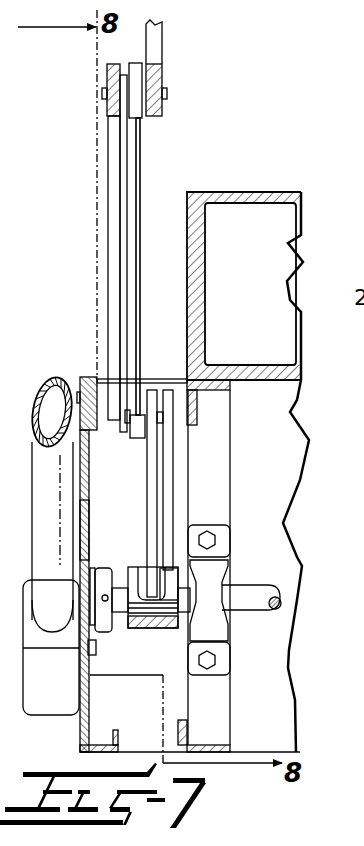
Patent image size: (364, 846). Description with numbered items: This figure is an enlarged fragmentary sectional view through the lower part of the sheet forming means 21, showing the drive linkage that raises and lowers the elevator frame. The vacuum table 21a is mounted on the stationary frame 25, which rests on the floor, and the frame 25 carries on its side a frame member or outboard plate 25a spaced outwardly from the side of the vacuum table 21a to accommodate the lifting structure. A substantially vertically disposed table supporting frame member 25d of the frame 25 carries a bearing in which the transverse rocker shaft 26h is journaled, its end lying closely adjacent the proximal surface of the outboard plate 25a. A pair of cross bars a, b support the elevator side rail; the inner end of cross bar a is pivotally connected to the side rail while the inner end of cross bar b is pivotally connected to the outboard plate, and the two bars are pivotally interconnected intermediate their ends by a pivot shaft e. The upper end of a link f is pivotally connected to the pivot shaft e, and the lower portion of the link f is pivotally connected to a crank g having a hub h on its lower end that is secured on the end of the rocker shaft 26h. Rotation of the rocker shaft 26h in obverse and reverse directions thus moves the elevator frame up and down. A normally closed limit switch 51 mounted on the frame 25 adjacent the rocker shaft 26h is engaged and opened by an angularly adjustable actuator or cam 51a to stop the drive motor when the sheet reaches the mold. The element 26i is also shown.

The stationary frame 25 is at (223, 754).
The outboard plate 25a is at (90, 533).
The table supporting frame member 25d is at (228, 453).
The sheet forming means 21 is at (290, 188).
The vacuum table 21a is at (218, 192).
The cross bar a is at (155, 43).
The pivot shaft e is at (103, 93).
The cross bar b is at (115, 203).
The link f is at (141, 148).
The crank g is at (150, 462).
The limit switch 51 is at (100, 545).
The actuator or cam 51a is at (108, 634).
The hub h is at (144, 630).
The lever 26i is at (222, 618).
The rocker shaft 26h is at (266, 595).